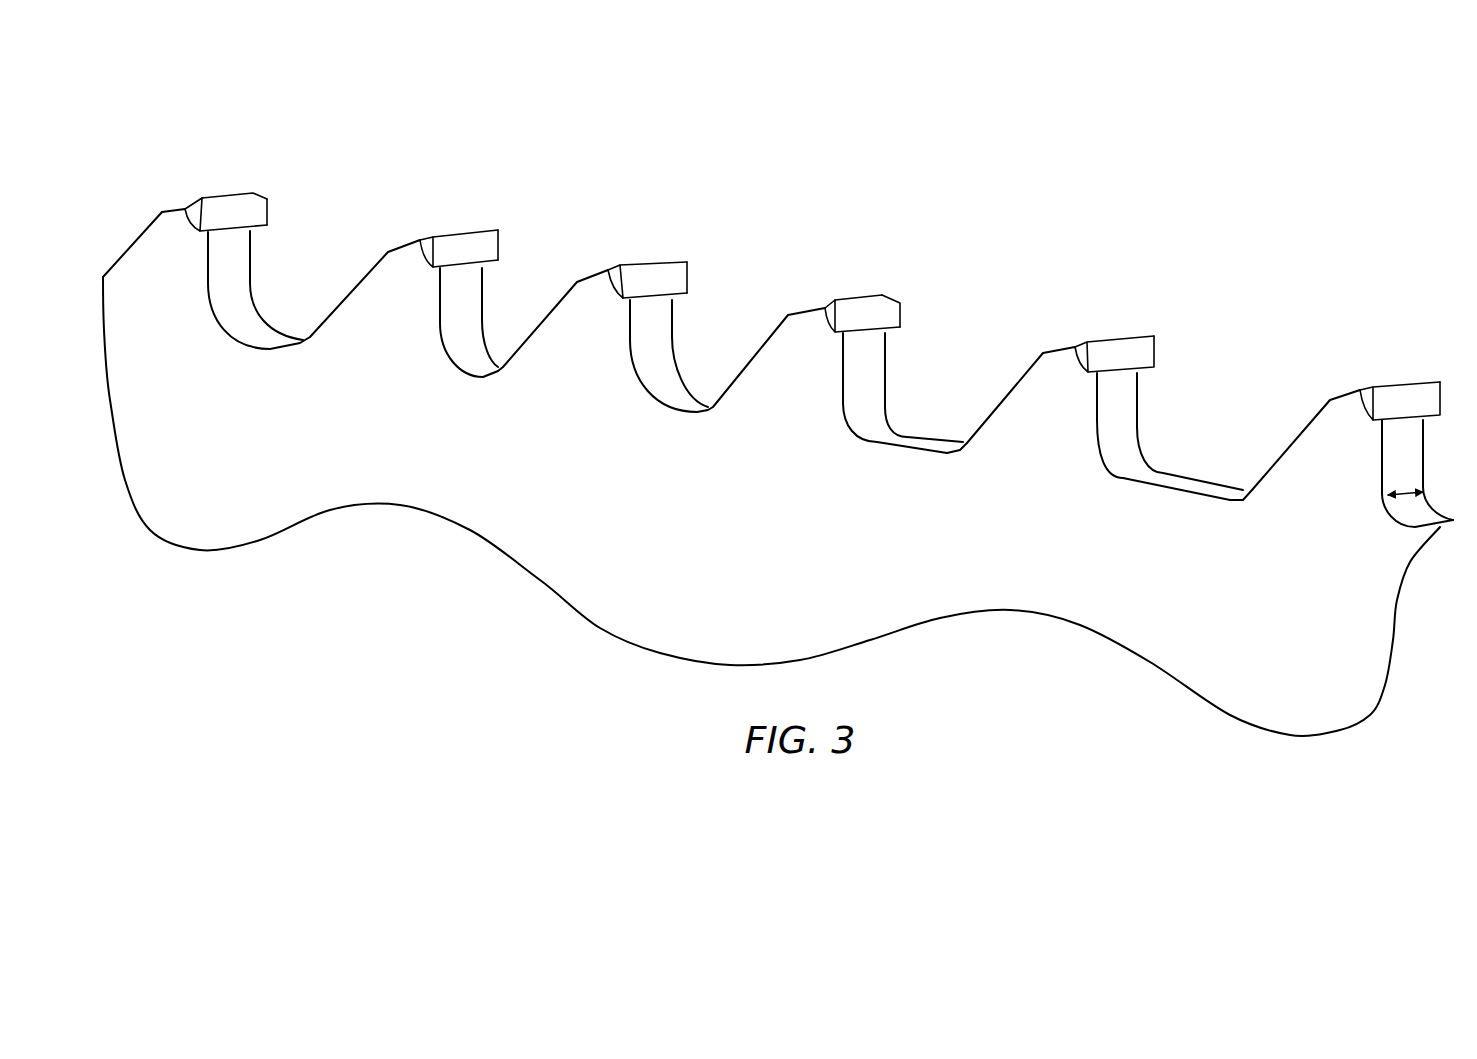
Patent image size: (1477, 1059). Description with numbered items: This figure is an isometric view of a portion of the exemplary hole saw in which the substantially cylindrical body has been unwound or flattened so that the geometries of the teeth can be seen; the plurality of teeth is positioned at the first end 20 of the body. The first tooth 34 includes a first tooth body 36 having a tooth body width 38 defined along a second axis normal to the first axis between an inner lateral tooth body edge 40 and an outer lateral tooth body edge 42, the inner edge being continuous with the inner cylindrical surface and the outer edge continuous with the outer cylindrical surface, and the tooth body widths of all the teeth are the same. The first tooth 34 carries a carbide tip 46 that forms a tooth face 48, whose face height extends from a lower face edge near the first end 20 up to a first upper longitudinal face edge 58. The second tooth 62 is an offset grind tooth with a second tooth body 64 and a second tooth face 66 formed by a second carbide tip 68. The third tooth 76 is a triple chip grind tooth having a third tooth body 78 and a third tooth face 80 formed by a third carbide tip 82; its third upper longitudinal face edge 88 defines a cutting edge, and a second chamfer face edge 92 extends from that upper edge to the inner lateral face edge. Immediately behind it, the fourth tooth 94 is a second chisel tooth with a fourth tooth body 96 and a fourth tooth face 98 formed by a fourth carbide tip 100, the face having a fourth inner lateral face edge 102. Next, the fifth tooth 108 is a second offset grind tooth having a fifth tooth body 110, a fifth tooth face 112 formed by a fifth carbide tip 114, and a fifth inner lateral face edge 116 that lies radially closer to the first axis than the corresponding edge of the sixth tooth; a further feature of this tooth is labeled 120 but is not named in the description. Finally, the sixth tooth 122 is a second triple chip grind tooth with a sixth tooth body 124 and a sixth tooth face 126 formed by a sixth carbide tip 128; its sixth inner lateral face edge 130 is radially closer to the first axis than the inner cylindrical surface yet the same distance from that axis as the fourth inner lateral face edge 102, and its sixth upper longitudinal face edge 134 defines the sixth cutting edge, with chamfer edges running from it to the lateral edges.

The first end 20 is at (285, 340).
The first tooth 34 is at (1341, 432).
The first tooth body 36 is at (1343, 456).
The tooth body width 38 is at (1405, 493).
The inner lateral tooth body edge 40 is at (1425, 460).
The outer lateral tooth body edge 42 is at (1367, 473).
The carbide tip 46 is at (1363, 393).
The tooth face 48 is at (1392, 413).
The first upper longitudinal face edge 58 is at (1407, 382).
The second tooth 62 is at (1197, 362).
The second tooth body 64 is at (1044, 426).
The second tooth face 66 is at (1130, 353).
The second carbide tip 68 is at (1075, 350).
The third tooth 76 is at (922, 316).
The third tooth body 78 is at (782, 396).
The third tooth face 80 is at (878, 310).
The third carbide tip 82 is at (825, 313).
The third upper longitudinal face edge 88 is at (850, 297).
The second chamfer face edge 92 is at (897, 298).
The fourth tooth 94 is at (699, 281).
The fourth tooth body 96 is at (574, 362).
The fourth tooth face 98 is at (663, 280).
The fourth carbide tip 100 is at (608, 273).
The fourth inner lateral face edge 102 is at (692, 273).
The fifth tooth 108 is at (491, 240).
The fifth tooth body 110 is at (374, 336).
The fifth tooth face 112 is at (477, 248).
The fifth carbide tip 114 is at (420, 237).
The fifth inner lateral face edge 116 is at (502, 245).
The top surface of tip 120 is at (470, 230).
The sixth tooth 122 is at (261, 207).
The sixth tooth body 124 is at (151, 287).
The sixth tooth face 126 is at (242, 210).
The sixth carbide tip 128 is at (185, 210).
The sixth inner lateral face edge 130 is at (268, 213).
The sixth upper longitudinal face edge 134 is at (234, 193).